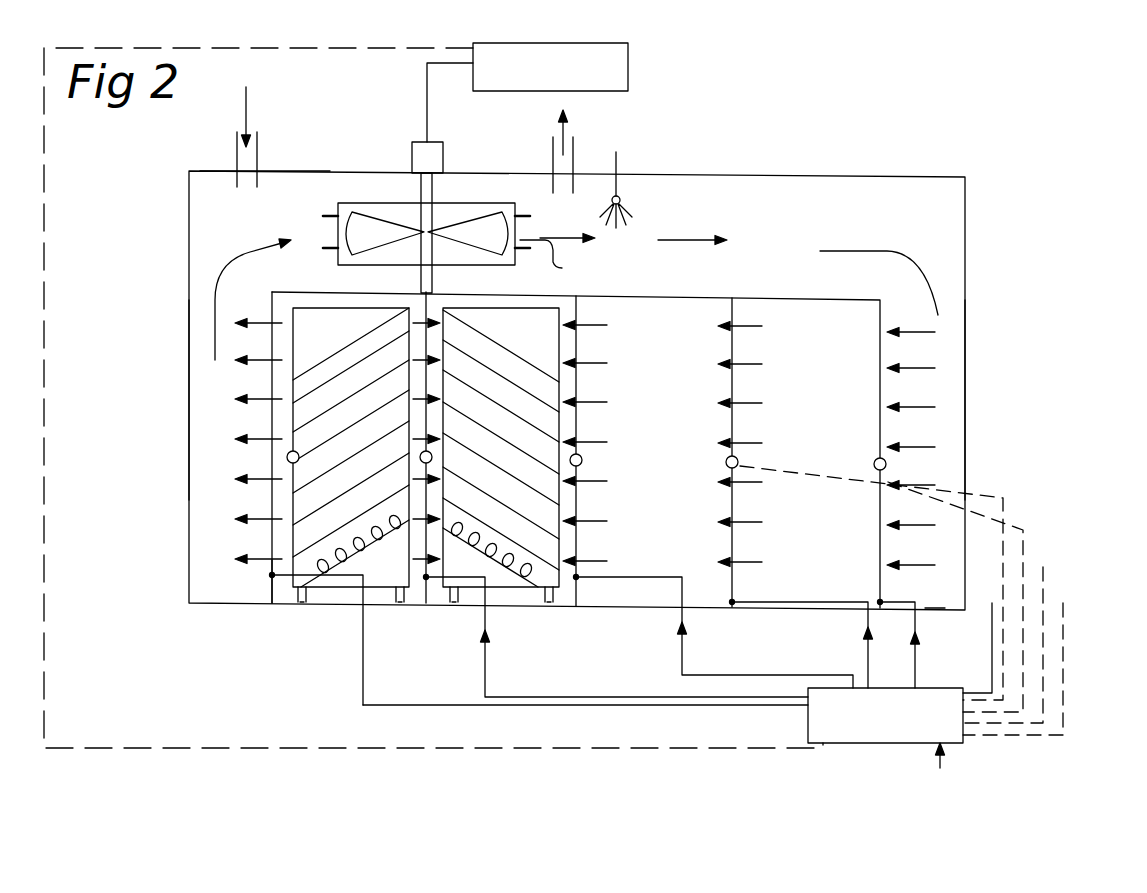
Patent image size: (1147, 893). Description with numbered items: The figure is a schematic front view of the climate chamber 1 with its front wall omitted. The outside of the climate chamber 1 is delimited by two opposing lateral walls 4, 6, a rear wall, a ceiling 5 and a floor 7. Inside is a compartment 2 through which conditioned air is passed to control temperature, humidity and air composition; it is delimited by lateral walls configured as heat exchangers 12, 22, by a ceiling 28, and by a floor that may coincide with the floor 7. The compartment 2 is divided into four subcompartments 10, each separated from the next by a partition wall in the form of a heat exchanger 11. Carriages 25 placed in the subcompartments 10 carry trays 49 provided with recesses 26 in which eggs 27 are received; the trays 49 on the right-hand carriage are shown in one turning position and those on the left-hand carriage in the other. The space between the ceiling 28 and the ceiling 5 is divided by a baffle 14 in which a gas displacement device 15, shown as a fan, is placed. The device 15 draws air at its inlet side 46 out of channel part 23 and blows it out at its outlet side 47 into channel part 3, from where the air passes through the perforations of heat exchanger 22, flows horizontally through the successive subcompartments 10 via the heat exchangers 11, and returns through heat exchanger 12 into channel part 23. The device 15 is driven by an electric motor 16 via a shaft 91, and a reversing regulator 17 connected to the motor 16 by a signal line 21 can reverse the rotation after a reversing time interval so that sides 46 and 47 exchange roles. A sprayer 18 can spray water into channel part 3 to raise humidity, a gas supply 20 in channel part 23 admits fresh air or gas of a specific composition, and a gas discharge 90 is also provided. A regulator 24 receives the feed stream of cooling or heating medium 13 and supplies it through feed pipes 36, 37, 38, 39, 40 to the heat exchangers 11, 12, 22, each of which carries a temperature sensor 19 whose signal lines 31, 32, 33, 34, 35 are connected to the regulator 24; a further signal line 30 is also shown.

The climate chamber 1 is at (984, 142).
The compartment 2 is at (796, 298).
The channel part 3 is at (903, 203).
The lateral wall of the climate chamber 4 is at (966, 400).
The ceiling of the climate chamber 5 is at (268, 166).
The lateral wall of the climate chamber 6 is at (189, 398).
The floor of the climate chamber 7 is at (935, 614).
The subcompartment 10 is at (342, 596).
The heat exchanger 11 is at (421, 594).
The heat exchanger 12 is at (272, 587).
The fluid supply 13 is at (945, 765).
The dividing baffle 14 is at (420, 273).
The gas displacement device 15 is at (365, 227).
The motor 16 is at (424, 160).
The reversing regulator 17 is at (527, 79).
The sprayer 18 is at (621, 196).
The temperature sensor 19 is at (287, 457).
The gas supply 20 is at (243, 158).
The signal line 21 is at (458, 64).
The heat exchanger 22 is at (882, 605).
The channel part 23 is at (215, 500).
The regulator for heat exchangers 24 is at (866, 729).
The carriage 25 is at (375, 604).
The egg receptacle 26 is at (325, 596).
The egg 27 is at (522, 594).
The ceiling of the compartment 28 is at (752, 297).
The signal line 30 is at (512, 746).
The signal line 31 is at (1008, 513).
The signal line 32 is at (1027, 548).
The signal line 33 is at (1045, 585).
The signal line 34 is at (1065, 620).
The signal line 35 is at (992, 652).
The fluid supply of the heat exchanger 36 is at (917, 680).
The fluid supply of the heat exchanger 37 is at (868, 650).
The fluid supply of the heat exchanger 38 is at (783, 676).
The fluid supply of the heat exchanger 39 is at (484, 672).
The fluid supply of the heat exchanger 40 is at (417, 705).
The inlet/outlet 46 is at (327, 231).
The inlet/outlet 47 is at (557, 256).
The tray 49 is at (329, 636).
The gas discharge 90 is at (578, 166).
The shaft 91 is at (420, 212).